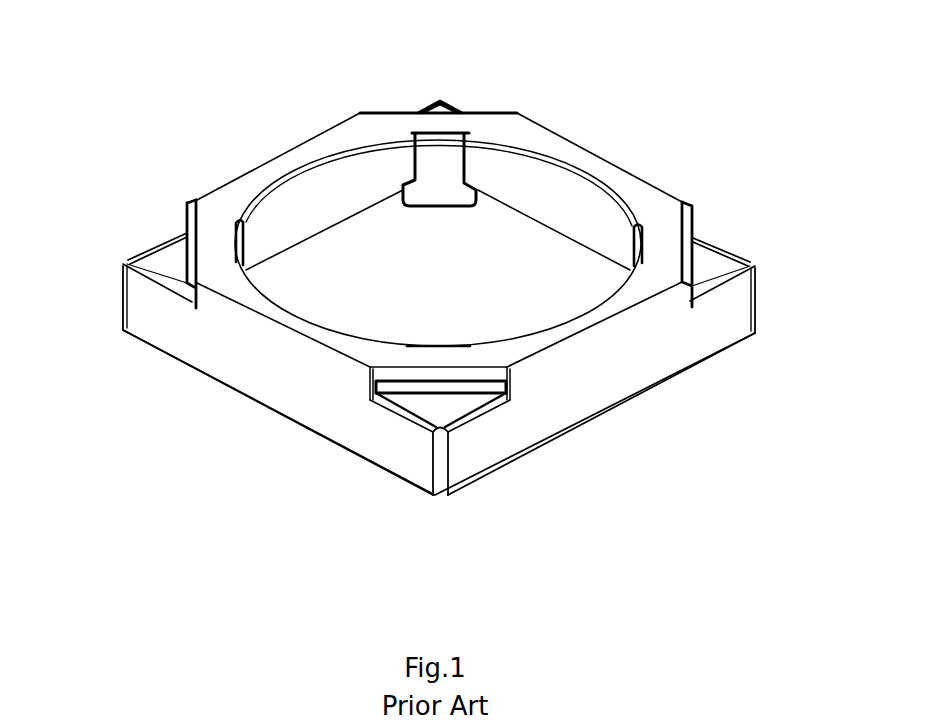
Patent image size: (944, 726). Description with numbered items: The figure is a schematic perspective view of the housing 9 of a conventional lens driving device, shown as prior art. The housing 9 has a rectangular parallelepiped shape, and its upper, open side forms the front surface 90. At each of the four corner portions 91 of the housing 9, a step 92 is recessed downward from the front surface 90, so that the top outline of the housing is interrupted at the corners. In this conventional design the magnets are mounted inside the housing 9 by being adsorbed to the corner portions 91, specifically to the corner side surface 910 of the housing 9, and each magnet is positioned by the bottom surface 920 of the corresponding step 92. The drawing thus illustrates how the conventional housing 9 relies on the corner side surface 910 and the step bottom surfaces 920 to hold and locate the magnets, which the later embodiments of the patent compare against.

The housing 9 is at (732, 317).
The front surface 90 is at (603, 172).
The corner portions 91 is at (457, 90).
The steps 92 is at (692, 235).
The corner side surface 910 is at (398, 455).
The bottom surfaces 920 is at (457, 400).